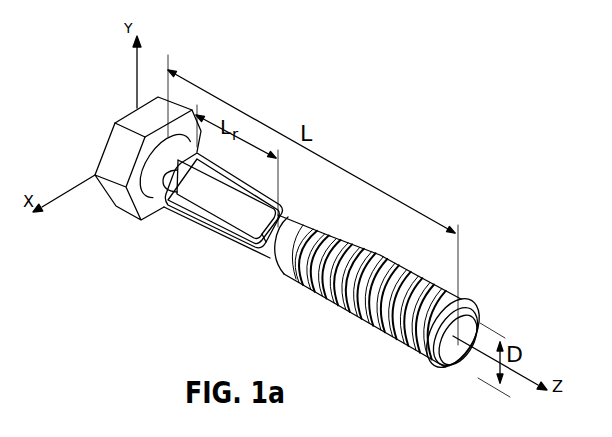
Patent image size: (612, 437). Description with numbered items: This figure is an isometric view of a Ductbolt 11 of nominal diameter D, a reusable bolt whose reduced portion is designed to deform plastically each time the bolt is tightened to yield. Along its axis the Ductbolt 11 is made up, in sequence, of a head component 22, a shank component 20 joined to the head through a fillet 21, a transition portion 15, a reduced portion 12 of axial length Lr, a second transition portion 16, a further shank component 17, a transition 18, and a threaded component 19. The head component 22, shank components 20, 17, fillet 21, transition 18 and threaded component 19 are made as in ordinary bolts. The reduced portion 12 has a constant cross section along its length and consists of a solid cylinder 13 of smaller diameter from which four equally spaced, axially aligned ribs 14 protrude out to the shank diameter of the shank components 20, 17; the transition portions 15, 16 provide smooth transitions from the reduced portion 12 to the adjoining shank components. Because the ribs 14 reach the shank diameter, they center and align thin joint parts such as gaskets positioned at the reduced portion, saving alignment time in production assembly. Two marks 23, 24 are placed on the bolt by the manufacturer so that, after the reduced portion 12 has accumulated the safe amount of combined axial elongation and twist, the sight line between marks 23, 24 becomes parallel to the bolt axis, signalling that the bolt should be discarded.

The Ductbolt 11 is at (448, 341).
The reduced portion 12 is at (236, 172).
The solid cylinder 13 is at (221, 202).
The axially aligned ribs 14 is at (246, 191).
The transition portion 15 is at (166, 208).
The transition portion 16 is at (272, 218).
The shank component 17 is at (272, 253).
The transition 18 is at (295, 268).
The threaded component 19 is at (347, 317).
The shank component 20 is at (152, 215).
The fillet 21 is at (130, 211).
The head component 22 is at (124, 114).
The mark 23 is at (166, 158).
The mark 24 is at (279, 221).